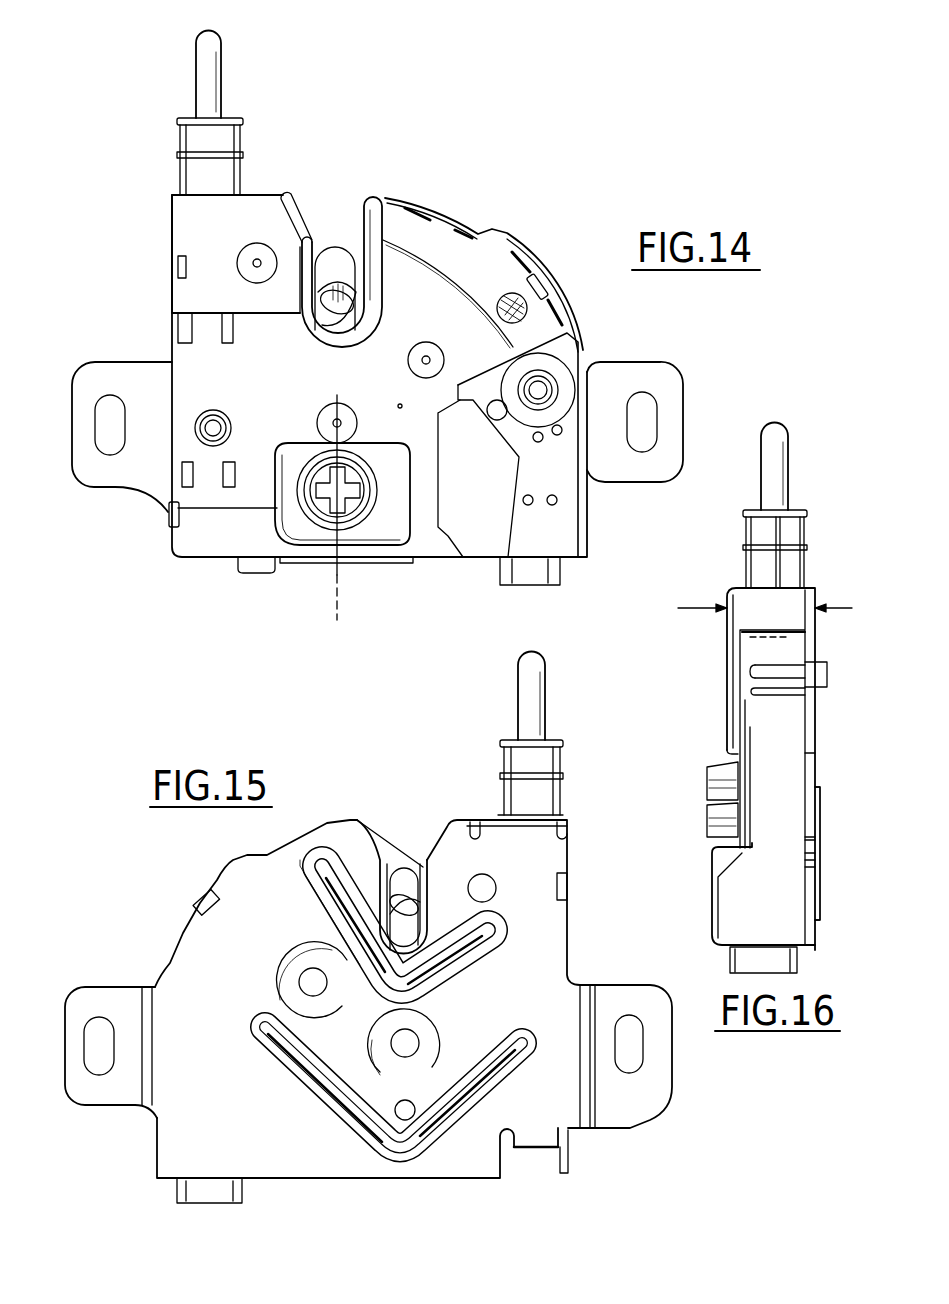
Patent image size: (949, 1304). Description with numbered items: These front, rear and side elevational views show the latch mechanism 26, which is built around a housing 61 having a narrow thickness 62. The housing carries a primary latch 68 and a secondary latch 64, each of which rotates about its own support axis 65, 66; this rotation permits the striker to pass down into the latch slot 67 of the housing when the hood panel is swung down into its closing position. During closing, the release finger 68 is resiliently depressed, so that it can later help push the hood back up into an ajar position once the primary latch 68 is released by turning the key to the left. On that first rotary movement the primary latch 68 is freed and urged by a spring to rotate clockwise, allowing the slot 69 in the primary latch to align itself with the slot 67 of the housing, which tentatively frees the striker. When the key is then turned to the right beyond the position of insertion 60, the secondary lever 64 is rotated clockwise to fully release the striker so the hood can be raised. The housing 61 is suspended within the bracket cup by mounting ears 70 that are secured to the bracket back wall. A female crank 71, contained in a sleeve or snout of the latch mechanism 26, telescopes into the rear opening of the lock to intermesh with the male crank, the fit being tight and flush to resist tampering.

In FIG. 14, the latch mechanism 26 is at (207, 565).
In FIG. 14, the position of insertion 60 is at (337, 585).
In FIG. 14, the housing 61 is at (188, 540).
In FIG. 16, the narrow thickness 62 is at (692, 610).
In FIG. 14, the secondary latch 64 is at (320, 245).
In FIG. 15, the secondary latch 64 is at (387, 847).
In FIG. 14, the support axis 65 is at (409, 358).
In FIG. 16, the support axis 65 is at (715, 772).
In FIG. 14, the support axis 66 is at (335, 421).
In FIG. 16, the support axis 66 is at (710, 828).
In FIG. 14, the latch slot 67 is at (318, 243).
In FIG. 14, the primary latch 68 is at (223, 73).
In FIG. 15, the primary latch 68 is at (523, 682).
In FIG. 16, the primary latch 68 is at (783, 473).
In FIG. 14, the slot 69 is at (347, 323).
In FIG. 15, the slot 69 is at (425, 937).
In FIG. 14, the mounting ears 70 is at (128, 487).
In FIG. 15, the mounting ears 70 is at (92, 993).
In FIG. 16, the mounting ears 70 is at (810, 777).
In FIG. 14, the female crank 71 is at (348, 484).